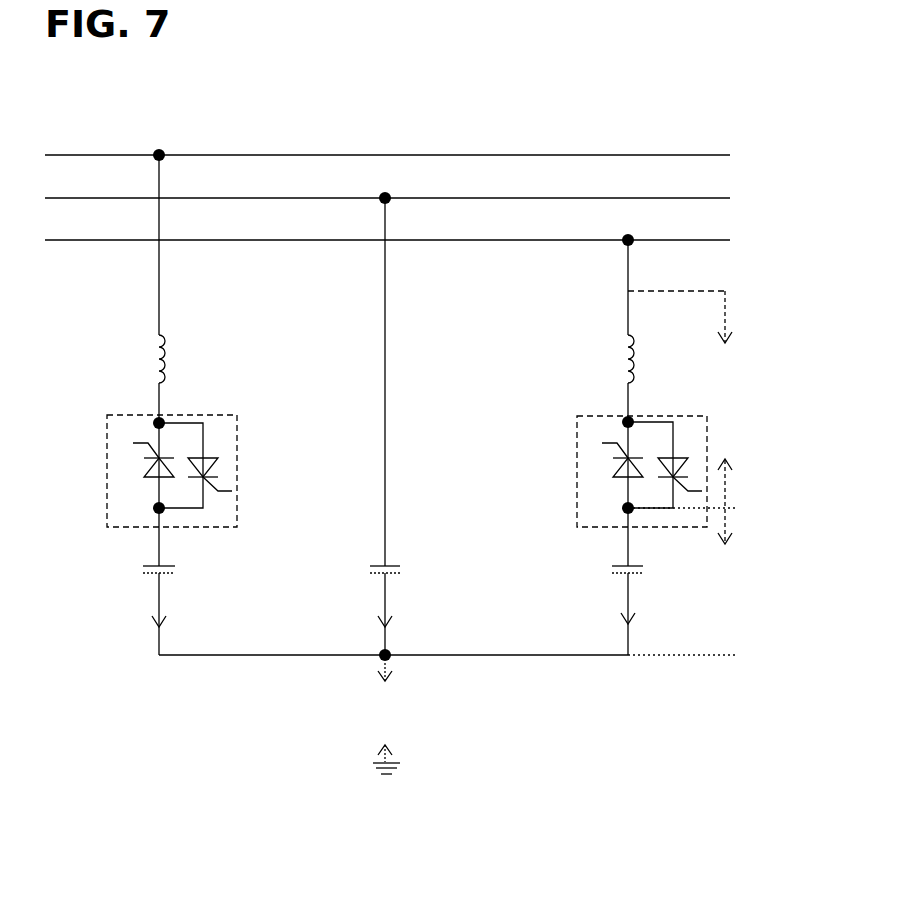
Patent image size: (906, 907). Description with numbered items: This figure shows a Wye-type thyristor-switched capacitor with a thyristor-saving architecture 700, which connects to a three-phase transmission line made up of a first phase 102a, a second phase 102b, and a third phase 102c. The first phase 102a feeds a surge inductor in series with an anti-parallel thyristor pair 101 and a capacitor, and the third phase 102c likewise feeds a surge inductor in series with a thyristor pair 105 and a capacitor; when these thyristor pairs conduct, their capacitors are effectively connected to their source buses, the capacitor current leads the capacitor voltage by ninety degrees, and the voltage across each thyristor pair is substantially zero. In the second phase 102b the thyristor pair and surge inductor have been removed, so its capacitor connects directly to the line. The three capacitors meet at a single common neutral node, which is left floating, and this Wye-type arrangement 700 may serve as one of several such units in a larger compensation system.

The Wye-type TSC with a thyristor-saving architecture 700 is at (90, 84).
The first phase 102a is at (424, 155).
The second phase 102b is at (424, 188).
The third phase 102c is at (423, 225).
The anti-parallel thyristor pair 101 is at (224, 415).
The thyristor pair 105 is at (690, 415).